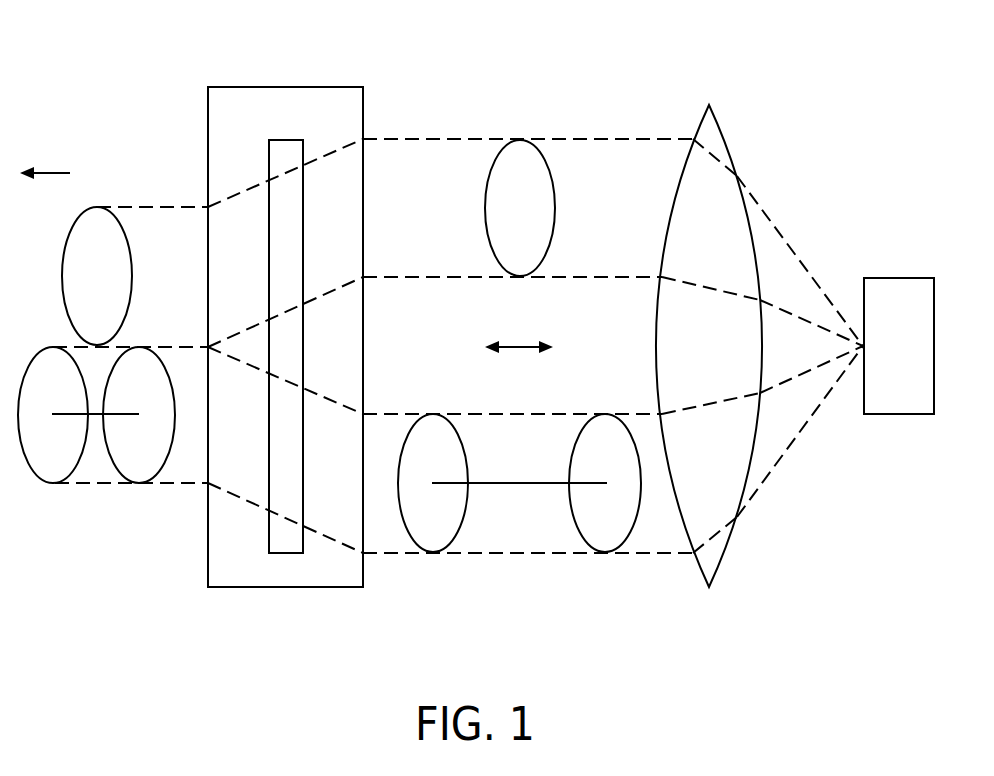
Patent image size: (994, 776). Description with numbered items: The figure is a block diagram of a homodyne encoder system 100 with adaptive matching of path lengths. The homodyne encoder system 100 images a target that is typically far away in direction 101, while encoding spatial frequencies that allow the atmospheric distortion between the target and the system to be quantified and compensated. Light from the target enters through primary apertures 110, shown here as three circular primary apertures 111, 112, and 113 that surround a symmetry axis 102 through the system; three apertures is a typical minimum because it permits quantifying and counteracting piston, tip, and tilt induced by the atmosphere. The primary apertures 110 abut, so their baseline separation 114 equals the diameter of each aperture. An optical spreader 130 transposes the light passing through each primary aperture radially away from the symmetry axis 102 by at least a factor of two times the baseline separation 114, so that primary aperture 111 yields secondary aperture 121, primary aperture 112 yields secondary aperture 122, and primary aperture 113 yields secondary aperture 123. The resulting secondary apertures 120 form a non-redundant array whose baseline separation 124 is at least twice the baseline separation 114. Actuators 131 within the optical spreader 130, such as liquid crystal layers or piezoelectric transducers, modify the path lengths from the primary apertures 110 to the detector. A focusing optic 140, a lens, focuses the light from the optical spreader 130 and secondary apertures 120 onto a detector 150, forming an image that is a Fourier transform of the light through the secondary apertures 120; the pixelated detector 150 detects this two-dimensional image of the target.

The homodyne encoder system 100 is at (50, 70).
The direction 101 is at (52, 172).
The symmetry axis 102 is at (527, 345).
The primary apertures 110 is at (48, 241).
The primary aperture 111 is at (36, 347).
The primary aperture 112 is at (154, 347).
The primary aperture 113 is at (133, 277).
The baseline separation 114 is at (94, 413).
The secondary apertures 120 is at (403, 186).
The secondary aperture 121 is at (467, 457).
The secondary aperture 122 is at (570, 457).
The secondary aperture 123 is at (485, 207).
The baseline separation 124 is at (510, 482).
The optical spreader 130 is at (208, 122).
The actuators 131 is at (269, 167).
The focusing optic 140 is at (702, 122).
The detector 150 is at (880, 278).